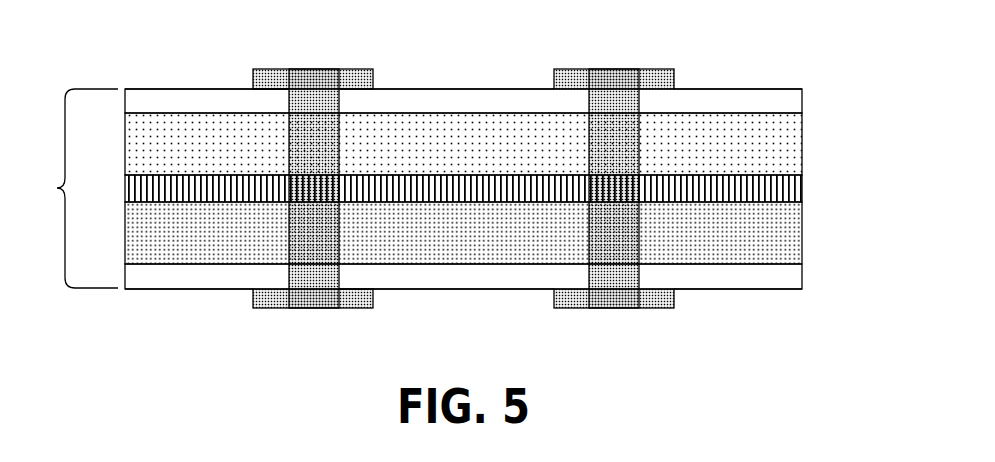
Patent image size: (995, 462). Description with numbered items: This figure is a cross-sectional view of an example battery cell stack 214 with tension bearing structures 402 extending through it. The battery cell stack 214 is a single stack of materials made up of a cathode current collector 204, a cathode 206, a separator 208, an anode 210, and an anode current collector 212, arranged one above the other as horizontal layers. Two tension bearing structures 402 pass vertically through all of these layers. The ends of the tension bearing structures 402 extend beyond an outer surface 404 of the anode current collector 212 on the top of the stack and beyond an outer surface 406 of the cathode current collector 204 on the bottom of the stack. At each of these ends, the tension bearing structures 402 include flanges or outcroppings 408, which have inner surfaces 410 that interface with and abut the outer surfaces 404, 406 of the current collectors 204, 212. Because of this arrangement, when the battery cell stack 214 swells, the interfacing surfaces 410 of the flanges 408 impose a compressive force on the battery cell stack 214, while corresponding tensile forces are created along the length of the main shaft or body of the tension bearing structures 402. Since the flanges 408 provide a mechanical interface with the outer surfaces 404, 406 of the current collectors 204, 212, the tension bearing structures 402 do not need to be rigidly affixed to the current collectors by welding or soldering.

The tension bearing structure 402 is at (604, 158).
The outer surface of the anode current collector 404 is at (173, 89).
The outer surface of the cathode current collector 406 is at (173, 289).
The flange 408 is at (275, 69).
The inner surface 410 is at (263, 93).
The anode current collector 212 is at (790, 102).
The anode 210 is at (790, 145).
The separator 208 is at (790, 188).
The cathode 206 is at (790, 233).
The cathode current collector 204 is at (790, 275).
The battery cell stack 214 is at (69, 188).